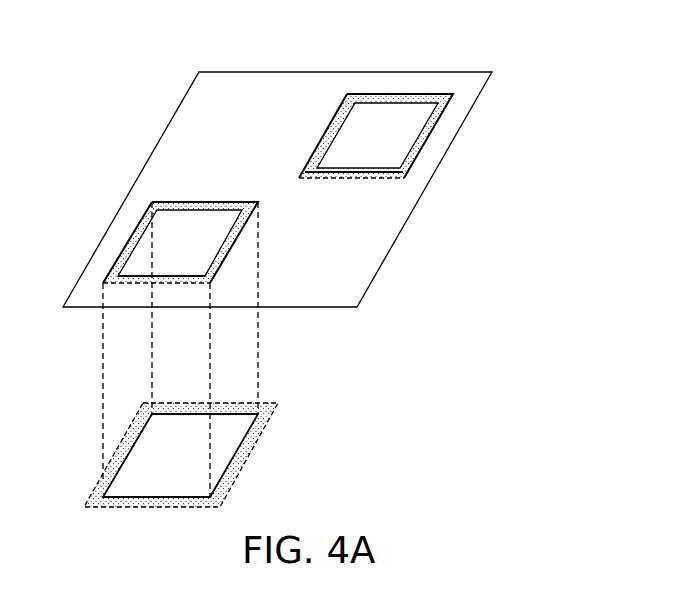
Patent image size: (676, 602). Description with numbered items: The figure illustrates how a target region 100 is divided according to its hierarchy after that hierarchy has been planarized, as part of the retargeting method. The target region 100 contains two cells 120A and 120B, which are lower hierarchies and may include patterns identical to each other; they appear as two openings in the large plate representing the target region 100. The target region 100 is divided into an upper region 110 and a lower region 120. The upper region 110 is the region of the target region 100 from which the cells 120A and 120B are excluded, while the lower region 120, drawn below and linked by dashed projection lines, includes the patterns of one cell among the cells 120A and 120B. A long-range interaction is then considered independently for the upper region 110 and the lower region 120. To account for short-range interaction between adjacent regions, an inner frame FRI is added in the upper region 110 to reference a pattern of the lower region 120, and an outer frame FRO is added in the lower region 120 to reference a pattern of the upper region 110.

The target region 100 is at (100, 46).
The upper region 110 is at (326, 72).
The cell 120A is at (204, 237).
The cell 120B is at (395, 130).
The inner frame FRI is at (409, 158).
The lower region 120 is at (228, 447).
The outer frame FRO is at (242, 466).